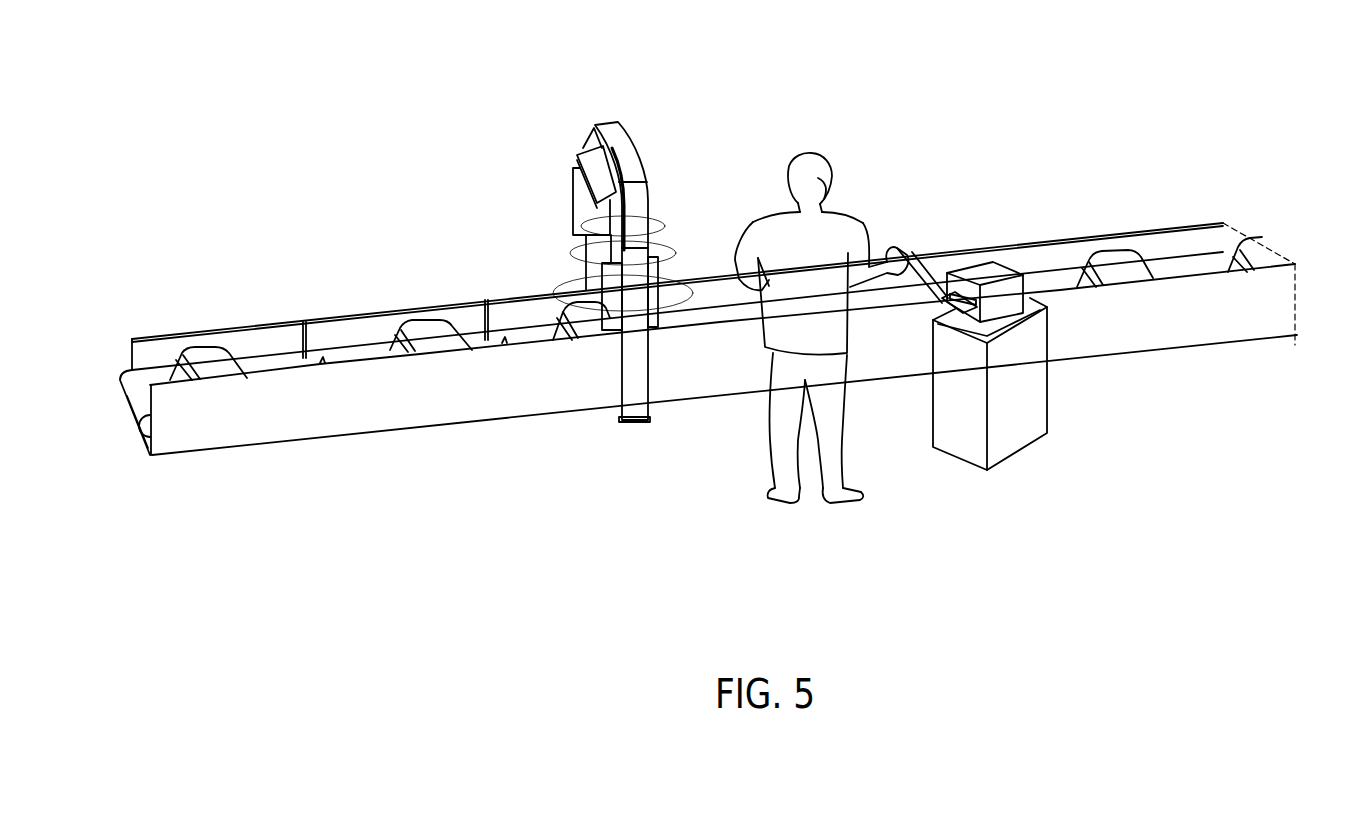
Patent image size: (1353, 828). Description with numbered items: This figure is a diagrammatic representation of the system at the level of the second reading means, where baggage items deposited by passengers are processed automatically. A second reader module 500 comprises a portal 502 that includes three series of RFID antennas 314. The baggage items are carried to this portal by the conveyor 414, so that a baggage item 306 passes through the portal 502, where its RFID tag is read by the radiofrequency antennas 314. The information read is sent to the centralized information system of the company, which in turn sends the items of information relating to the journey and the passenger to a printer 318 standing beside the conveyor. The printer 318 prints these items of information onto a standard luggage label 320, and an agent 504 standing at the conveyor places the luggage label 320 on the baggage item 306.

The second reader module 500 is at (557, 124).
The portal 502 is at (611, 127).
The agent 504 is at (819, 121).
The RFID antennas 314 is at (583, 200).
The baggage item 306 is at (577, 318).
The conveyor 414 is at (1086, 196).
The luggage label 320 is at (918, 273).
The printer 318 is at (1010, 297).